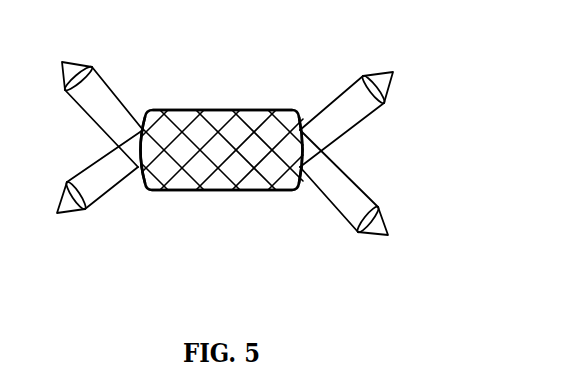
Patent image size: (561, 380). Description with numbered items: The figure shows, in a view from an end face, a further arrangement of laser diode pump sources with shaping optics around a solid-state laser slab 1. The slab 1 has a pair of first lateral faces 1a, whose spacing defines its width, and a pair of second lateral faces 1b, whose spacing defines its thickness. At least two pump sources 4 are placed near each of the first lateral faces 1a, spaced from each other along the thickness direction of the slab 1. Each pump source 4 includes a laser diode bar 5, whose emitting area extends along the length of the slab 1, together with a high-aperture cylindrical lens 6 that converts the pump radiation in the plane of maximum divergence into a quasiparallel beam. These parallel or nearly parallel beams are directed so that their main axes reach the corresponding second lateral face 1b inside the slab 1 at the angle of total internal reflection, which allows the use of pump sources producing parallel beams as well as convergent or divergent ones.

The solid-state laser slab 1 is at (225, 123).
The first lateral faces 1a is at (145, 191).
The second lateral faces 1b is at (187, 110).
The pump source 4 is at (72, 56).
The laser diode bar 5 is at (62, 63).
The high-aperture cylindrical lens 6 is at (67, 182).